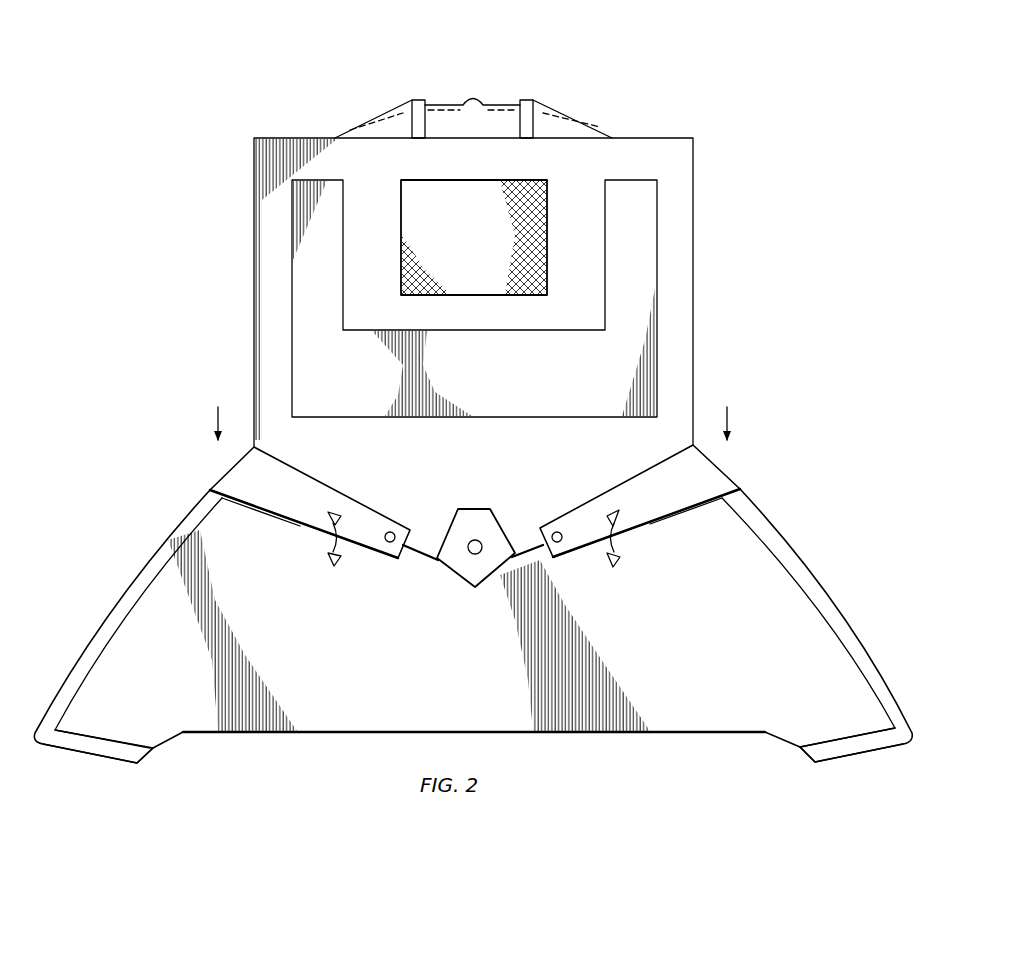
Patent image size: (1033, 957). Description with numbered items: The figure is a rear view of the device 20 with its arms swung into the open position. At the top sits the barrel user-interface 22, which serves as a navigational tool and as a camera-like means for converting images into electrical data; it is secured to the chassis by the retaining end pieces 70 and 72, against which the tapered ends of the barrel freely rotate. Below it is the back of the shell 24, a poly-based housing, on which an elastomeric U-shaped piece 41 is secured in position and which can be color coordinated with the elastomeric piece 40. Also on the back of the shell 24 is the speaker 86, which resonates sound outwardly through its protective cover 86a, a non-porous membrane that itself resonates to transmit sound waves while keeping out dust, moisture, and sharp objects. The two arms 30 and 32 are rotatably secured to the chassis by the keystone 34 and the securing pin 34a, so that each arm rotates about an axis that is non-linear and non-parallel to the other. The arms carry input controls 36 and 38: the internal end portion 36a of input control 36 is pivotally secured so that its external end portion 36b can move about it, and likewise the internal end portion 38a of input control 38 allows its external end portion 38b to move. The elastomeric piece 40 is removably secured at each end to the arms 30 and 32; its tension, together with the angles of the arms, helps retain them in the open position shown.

The device 20 is at (473, 421).
The barrel user-interface (BUI) 22 is at (473, 91).
The shell 24 is at (496, 300).
The arm 30 is at (85, 758).
The arm 32 is at (866, 758).
The keystone 34 is at (472, 539).
The securing pin 34a is at (475, 540).
The input control 36 is at (310, 520).
The internal end portion 36a is at (374, 527).
The external end portion 36b is at (258, 496).
The input control 38 is at (640, 519).
The internal end portion 38a is at (575, 526).
The external end portion 38b is at (690, 494).
The elastomeric piece 40 is at (487, 674).
The elastomeric U-shaped piece 41 is at (503, 402).
The retaining end piece 70 is at (557, 120).
The retaining end piece 72 is at (388, 120).
The speaker 86 is at (520, 176).
The protective cover 86a is at (452, 187).